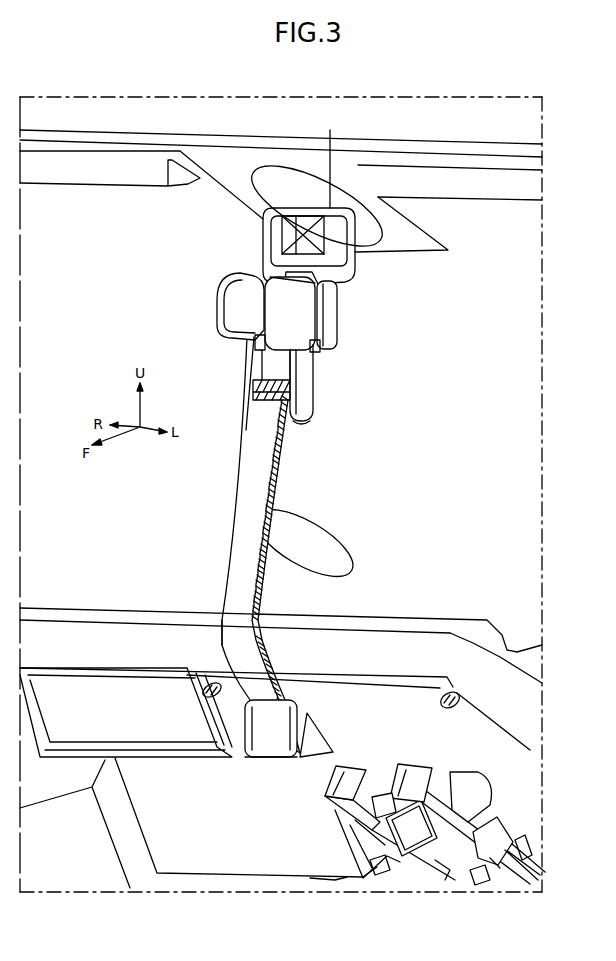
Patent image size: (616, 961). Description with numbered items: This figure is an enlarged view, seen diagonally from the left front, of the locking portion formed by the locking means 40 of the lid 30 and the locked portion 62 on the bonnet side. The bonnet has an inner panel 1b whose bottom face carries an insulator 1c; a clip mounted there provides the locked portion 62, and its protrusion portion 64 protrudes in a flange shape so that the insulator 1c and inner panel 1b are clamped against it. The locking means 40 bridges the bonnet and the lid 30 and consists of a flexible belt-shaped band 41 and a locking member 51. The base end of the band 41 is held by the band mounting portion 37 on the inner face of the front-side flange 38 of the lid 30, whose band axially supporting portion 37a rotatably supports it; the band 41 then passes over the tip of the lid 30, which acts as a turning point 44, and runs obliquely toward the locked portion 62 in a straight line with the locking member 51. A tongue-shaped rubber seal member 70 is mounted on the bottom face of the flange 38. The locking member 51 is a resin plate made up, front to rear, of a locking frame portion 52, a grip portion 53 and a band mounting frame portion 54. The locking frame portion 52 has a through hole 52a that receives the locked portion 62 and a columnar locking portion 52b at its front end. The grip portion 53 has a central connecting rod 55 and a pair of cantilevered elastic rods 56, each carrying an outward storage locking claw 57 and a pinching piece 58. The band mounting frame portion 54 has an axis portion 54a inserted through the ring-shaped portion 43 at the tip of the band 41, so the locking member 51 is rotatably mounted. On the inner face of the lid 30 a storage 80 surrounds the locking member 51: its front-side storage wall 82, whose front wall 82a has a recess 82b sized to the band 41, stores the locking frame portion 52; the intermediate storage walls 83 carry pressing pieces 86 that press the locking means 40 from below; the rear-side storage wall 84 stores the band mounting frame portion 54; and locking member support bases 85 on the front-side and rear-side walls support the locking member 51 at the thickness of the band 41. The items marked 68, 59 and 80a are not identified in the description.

The inner panel 1b is at (386, 116).
The insulator 1c is at (432, 141).
The locking portion 52b is at (330, 160).
The opening of roof rail 68 is at (252, 199).
The locked portion 62 is at (270, 236).
The protrusion portion 64 is at (388, 213).
The locking frame portion 52 is at (361, 265).
The through hole 52a is at (344, 274).
The spring lobe 59 is at (218, 298).
The elastic rods 56 is at (266, 301).
The locking member 51 is at (207, 322).
The storage locking claw 57 is at (338, 322).
The grip portion 53 is at (346, 345).
The pinching piece 58 is at (256, 348).
The connecting rod 55 is at (250, 360).
The band mounting frame portion 54 is at (315, 406).
The axis portion 54a is at (304, 426).
The ring-shaped portion 43 is at (292, 432).
The band 41 is at (240, 472).
The locking means 40 is at (328, 488).
The lid 30 is at (77, 606).
The flange 38 is at (185, 606).
The seal member 70 is at (395, 640).
The turning point 44 is at (245, 616).
The band axially supporting portion 37a is at (302, 722).
The band mounting portion 37 is at (245, 768).
The front wall 82a is at (345, 766).
The recess 82b is at (383, 795).
The front-side storage wall 82 is at (454, 784).
The intermediate storage wall 83 is at (512, 830).
The pressing pieces 86 is at (520, 842).
The rear-side storage wall 84 is at (538, 880).
The storage 80 is at (352, 822).
The locking member support bases 85 is at (368, 845).
The support base 80a is at (445, 878).